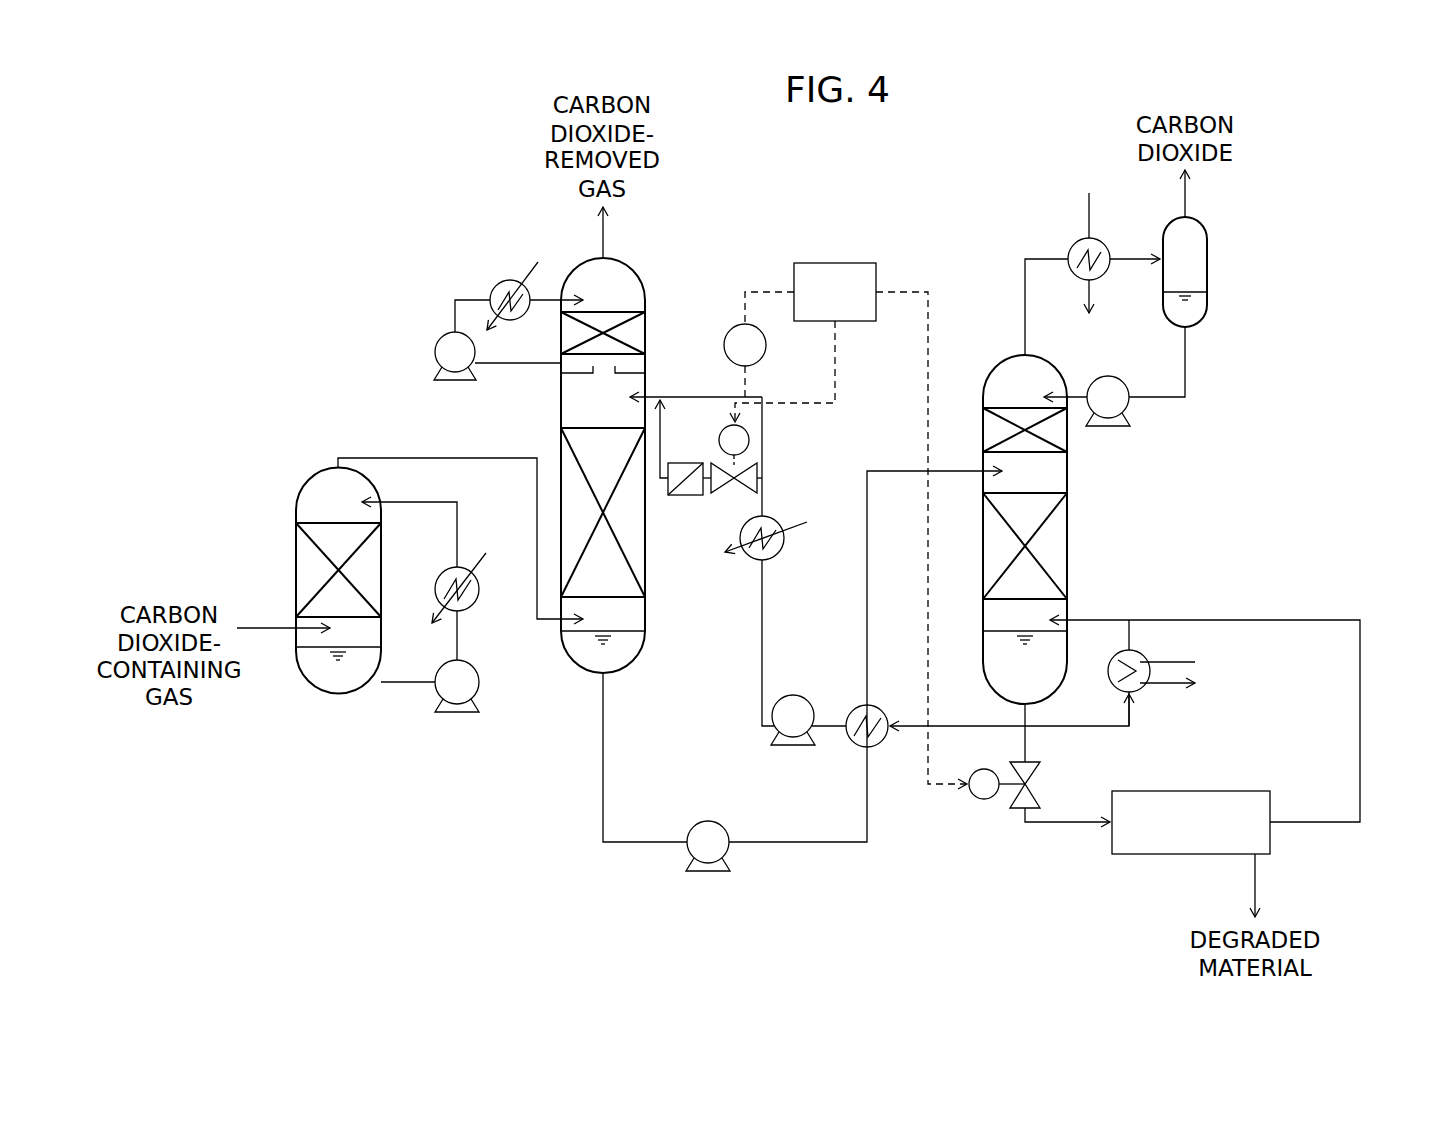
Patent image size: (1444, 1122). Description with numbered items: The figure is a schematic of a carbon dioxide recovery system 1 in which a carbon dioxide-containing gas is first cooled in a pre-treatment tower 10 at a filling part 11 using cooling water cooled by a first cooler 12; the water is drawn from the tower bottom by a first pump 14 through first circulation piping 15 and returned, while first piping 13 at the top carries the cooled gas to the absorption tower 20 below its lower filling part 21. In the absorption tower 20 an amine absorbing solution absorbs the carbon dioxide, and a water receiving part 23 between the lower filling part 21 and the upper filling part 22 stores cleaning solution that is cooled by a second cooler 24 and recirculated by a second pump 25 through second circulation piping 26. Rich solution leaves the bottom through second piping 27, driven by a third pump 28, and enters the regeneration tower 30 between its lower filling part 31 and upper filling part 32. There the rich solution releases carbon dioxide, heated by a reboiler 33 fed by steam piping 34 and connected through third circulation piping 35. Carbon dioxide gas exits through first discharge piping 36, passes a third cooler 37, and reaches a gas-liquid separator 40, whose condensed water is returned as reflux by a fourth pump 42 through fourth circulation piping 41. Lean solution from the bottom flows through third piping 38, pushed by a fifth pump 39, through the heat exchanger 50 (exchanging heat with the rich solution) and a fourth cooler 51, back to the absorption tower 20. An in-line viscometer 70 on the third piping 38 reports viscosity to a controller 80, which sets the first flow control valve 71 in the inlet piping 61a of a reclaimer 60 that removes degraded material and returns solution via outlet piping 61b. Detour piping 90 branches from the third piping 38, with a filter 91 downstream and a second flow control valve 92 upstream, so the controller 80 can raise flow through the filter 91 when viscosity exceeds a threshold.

The carbon dioxide recovery system 1 is at (384, 184).
The pre-treatment tower 10 is at (284, 452).
The filling part 11 is at (306, 574).
The first cooler 12 is at (479, 600).
The first piping 13 is at (432, 458).
The first pump 14 is at (480, 682).
The first circulation piping 15 is at (458, 504).
The absorption tower 20 is at (666, 248).
The lower filling part 21 is at (645, 566).
The upper filling part 22 is at (640, 326).
The water receiving part 23 is at (645, 372).
The second cooler 24 is at (510, 280).
The second pump 25 is at (434, 352).
The second circulation piping 26 is at (518, 364).
The second piping 27 is at (605, 744).
The third pump 28 is at (708, 821).
The regeneration tower 30 is at (990, 358).
The lower filling part 31 is at (1060, 564).
The upper filling part 32 is at (1060, 440).
The reboiler 33 is at (1137, 694).
The steam piping 34 is at (1188, 660).
The third circulation piping 35 is at (1075, 728).
The first discharge piping 36 is at (1023, 260).
The third cooler 37 is at (1070, 250).
The third piping 38 is at (766, 596).
The fifth pump 39 is at (793, 695).
The gas-liquid separator 40 is at (1218, 268).
The fourth circulation piping 41 is at (1188, 378).
The fourth pump 42 is at (1108, 376).
The heat exchanger 50 is at (854, 744).
The fourth cooler 51 is at (784, 548).
The reclaimer 60 is at (1146, 856).
The inlet piping 61a is at (1046, 824).
The outlet piping 61b is at (1362, 688).
The in-line viscometer 70 is at (766, 354).
The first flow control valve 71 is at (1010, 798).
The controller 80 is at (835, 263).
The detour piping 90 is at (662, 428).
The filter 91 is at (686, 496).
The second flow control valve 92 is at (760, 466).